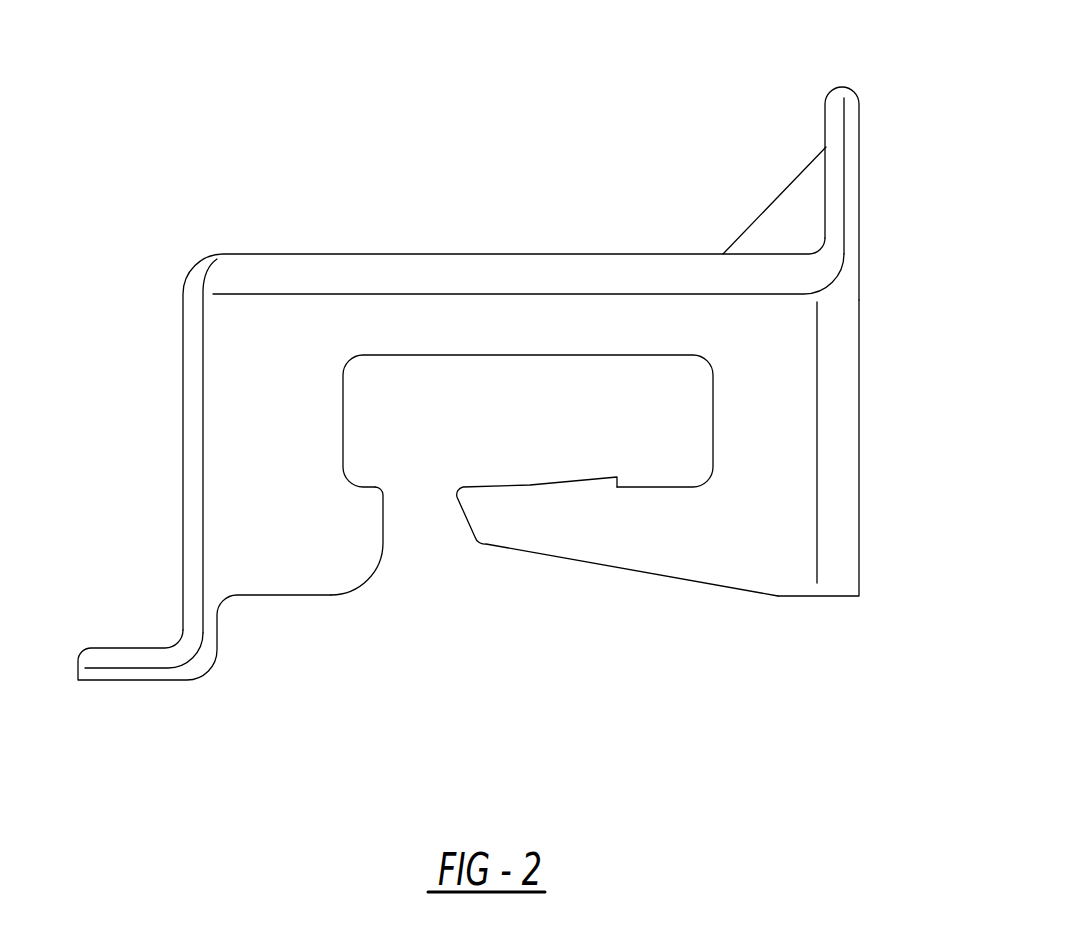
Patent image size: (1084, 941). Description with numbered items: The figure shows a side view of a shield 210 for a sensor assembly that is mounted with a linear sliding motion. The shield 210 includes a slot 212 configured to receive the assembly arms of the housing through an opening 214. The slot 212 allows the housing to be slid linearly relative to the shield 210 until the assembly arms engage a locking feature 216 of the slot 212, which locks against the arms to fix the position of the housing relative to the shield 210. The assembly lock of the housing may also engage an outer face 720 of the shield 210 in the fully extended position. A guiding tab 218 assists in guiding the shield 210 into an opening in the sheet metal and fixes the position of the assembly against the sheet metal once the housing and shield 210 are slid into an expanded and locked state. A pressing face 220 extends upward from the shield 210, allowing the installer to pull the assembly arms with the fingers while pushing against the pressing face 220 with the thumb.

The shield 210 is at (548, 235).
The pressing face 220 is at (833, 120).
The outer face 720 is at (859, 480).
The slot 212 is at (645, 418).
The locking feature 216 is at (602, 490).
The opening 214 is at (415, 526).
The guiding tab 218 is at (112, 659).